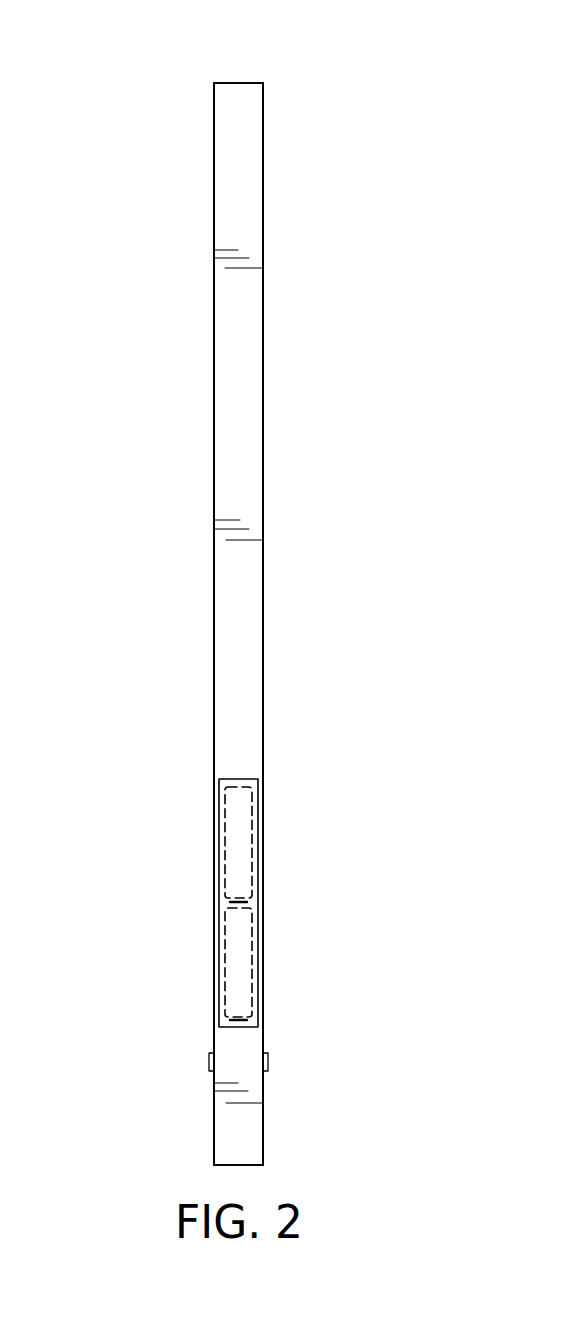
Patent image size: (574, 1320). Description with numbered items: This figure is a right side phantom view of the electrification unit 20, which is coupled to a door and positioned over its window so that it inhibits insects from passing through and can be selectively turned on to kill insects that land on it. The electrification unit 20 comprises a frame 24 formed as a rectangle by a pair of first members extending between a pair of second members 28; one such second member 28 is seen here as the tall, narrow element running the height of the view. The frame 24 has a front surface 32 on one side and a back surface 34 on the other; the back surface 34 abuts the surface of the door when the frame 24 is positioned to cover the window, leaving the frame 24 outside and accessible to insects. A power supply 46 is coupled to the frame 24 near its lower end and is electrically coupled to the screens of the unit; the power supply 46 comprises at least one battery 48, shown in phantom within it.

The electrification unit 20 is at (293, 365).
The frame 24 is at (217, 83).
The second member 28 is at (243, 200).
The front surface 32 is at (214, 449).
The back surface 34 is at (263, 468).
The power supply 46 is at (239, 787).
The battery 48 is at (250, 832).